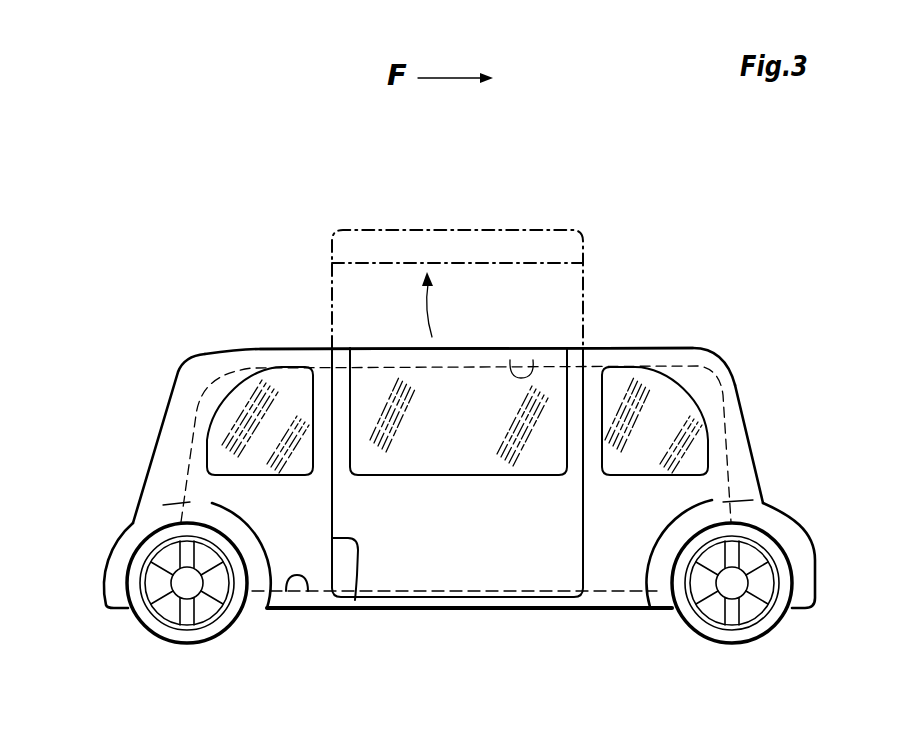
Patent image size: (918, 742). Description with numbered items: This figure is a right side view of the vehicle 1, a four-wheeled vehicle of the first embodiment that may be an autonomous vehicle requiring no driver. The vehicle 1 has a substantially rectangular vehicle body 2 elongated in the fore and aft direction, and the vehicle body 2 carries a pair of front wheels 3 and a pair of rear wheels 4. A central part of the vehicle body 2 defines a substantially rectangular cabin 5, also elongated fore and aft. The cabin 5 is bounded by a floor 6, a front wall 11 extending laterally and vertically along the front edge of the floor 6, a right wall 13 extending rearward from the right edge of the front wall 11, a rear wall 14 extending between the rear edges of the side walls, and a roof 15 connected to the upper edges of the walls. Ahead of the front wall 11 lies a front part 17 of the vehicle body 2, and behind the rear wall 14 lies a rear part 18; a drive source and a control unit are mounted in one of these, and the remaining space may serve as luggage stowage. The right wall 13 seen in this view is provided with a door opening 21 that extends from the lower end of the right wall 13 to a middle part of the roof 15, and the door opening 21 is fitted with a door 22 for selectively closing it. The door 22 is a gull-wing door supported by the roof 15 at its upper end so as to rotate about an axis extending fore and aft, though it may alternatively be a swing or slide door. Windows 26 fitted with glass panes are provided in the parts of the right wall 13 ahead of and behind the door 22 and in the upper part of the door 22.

The vehicle 1 is at (685, 260).
The vehicle body 2 is at (729, 353).
The front wheels 3 is at (748, 641).
The rear wheels 4 is at (205, 641).
The cabin 5 is at (535, 360).
The floor 6 is at (291, 598).
The front wall 11 is at (753, 442).
The right wall 13 is at (618, 562).
The rear wall 14 is at (167, 400).
The roof 15 is at (468, 347).
The front part 17 is at (795, 542).
The rear part 18 is at (120, 547).
The door opening 21 is at (355, 600).
The door 22 is at (457, 230).
The windows 26 is at (289, 385).